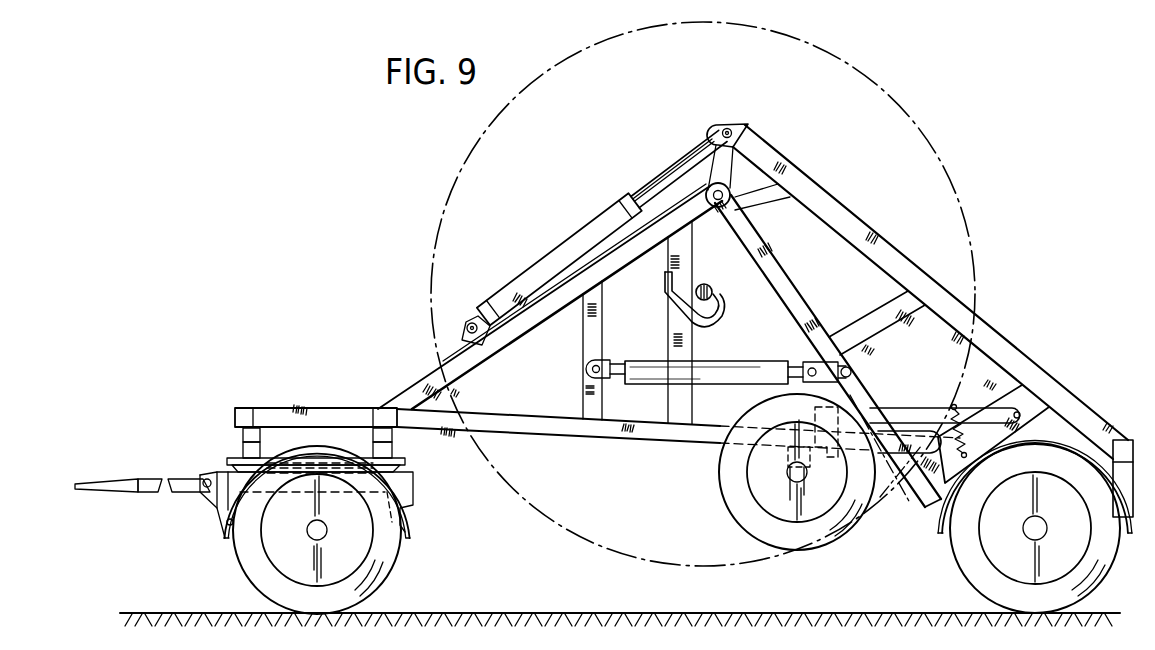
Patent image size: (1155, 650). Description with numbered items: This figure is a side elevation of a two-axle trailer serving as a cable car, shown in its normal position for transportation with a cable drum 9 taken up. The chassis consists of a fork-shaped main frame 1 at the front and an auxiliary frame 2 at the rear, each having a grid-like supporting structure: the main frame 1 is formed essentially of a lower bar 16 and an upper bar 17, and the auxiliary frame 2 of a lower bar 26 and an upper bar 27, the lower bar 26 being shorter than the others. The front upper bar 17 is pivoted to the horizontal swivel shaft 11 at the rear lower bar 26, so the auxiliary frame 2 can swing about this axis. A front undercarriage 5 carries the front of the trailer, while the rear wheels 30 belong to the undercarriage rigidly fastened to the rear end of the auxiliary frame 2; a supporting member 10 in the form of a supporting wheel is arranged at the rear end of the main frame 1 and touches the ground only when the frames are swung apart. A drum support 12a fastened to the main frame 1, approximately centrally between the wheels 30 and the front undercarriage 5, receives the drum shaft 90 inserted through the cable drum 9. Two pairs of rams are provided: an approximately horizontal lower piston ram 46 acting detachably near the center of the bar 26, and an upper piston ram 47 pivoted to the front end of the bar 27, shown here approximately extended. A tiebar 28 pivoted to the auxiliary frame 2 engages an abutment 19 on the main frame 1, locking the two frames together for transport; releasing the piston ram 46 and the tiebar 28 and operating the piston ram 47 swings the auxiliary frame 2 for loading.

The main frame 1 is at (416, 368).
The auxiliary frame 2 is at (1050, 325).
The front undercarriage 5 is at (222, 562).
The cable drum 9 is at (942, 140).
The supporting member 10 is at (746, 520).
The swivel shaft 11 is at (723, 191).
The drum support 12a is at (708, 320).
The lower bar 16 is at (566, 429).
The upper bar 17 is at (532, 320).
The abutment 19 is at (832, 458).
The lower bar 26 is at (797, 312).
The upper bar 27 is at (855, 224).
The tiebar 28 is at (928, 388).
The wheel 30 is at (963, 569).
The piston ram 46 is at (648, 361).
The piston ram 47 is at (576, 239).
The drum shaft 90 is at (716, 270).